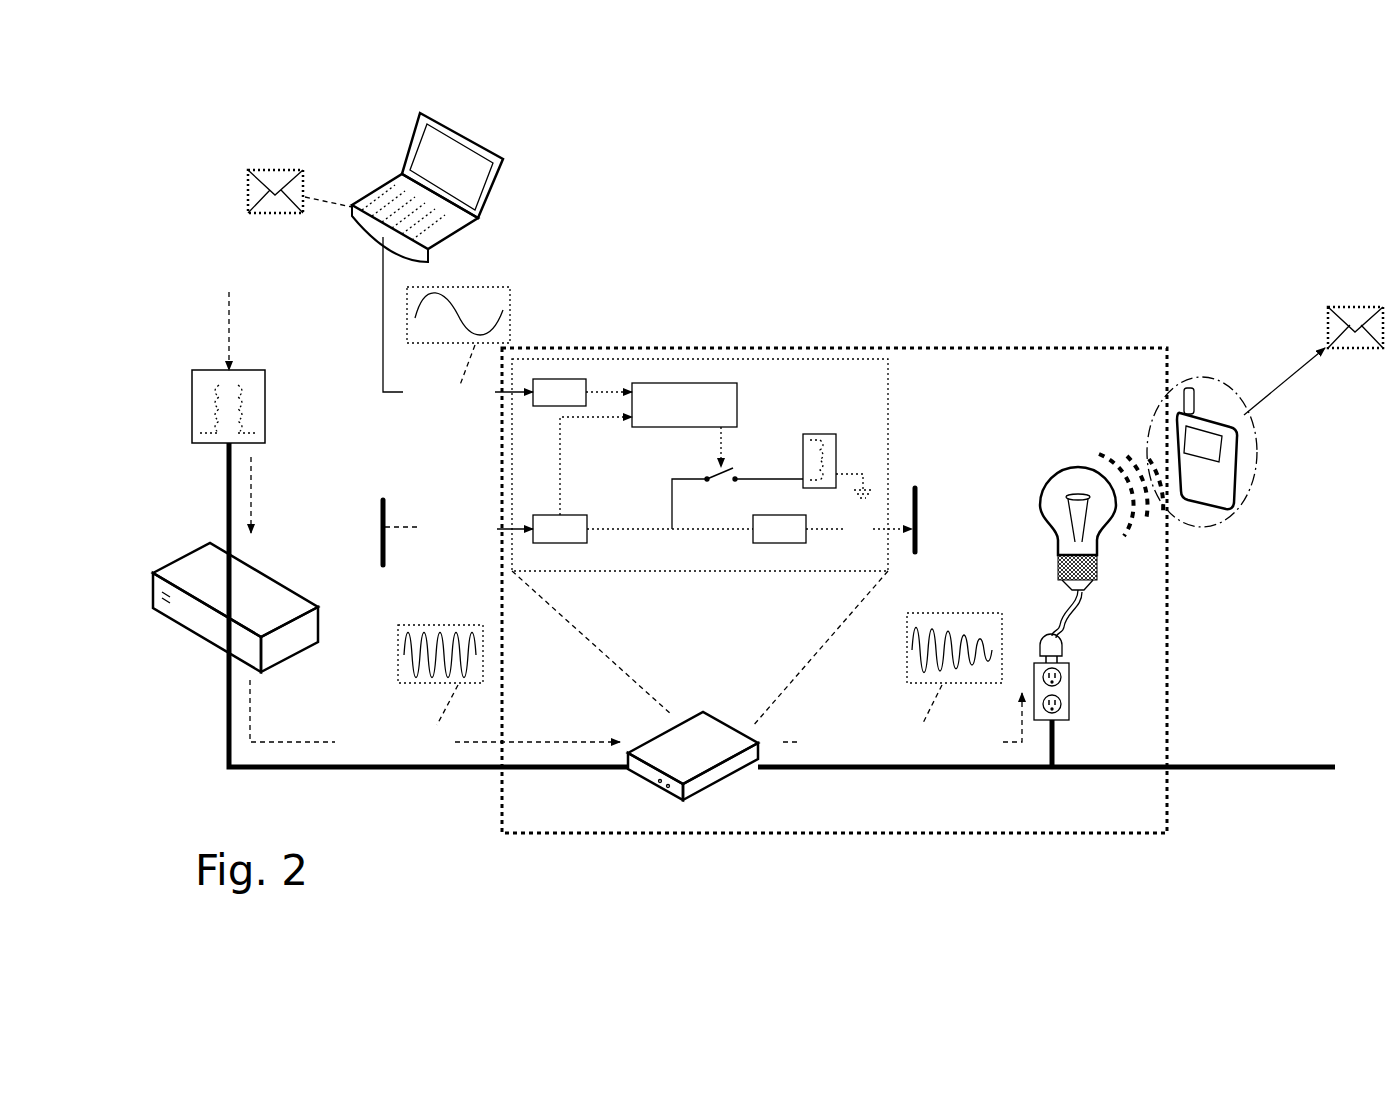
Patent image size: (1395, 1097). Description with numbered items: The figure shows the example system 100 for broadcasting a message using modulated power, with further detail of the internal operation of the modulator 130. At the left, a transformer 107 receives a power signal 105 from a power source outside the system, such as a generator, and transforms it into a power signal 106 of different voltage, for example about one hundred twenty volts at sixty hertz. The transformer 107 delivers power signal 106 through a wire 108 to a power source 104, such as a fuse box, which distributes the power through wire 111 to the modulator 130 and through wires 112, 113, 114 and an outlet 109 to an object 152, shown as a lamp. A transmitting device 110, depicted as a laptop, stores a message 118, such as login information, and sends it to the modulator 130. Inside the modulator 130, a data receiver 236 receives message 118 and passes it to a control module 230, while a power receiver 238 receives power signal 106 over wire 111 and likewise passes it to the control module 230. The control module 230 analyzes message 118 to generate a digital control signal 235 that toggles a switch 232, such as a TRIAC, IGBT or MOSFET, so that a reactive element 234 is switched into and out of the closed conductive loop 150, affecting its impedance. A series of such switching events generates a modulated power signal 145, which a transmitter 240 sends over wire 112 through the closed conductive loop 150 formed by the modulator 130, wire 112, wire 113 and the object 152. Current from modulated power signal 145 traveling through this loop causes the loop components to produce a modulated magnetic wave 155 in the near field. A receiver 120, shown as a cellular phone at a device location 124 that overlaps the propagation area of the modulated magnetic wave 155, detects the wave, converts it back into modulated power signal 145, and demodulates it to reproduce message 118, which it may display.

The system 100 is at (1280, 173).
The power source 104 is at (172, 565).
The power signal 105 is at (215, 330).
The power signal 106 is at (262, 497).
The transformer 107 is at (192, 425).
The wire 108 is at (227, 478).
The outlet 109 is at (1070, 672).
The transmitting device 110 is at (500, 192).
The wire 111 is at (380, 527).
The wire 112 is at (945, 564).
The wire 113 is at (1056, 753).
The wire 114 is at (1225, 770).
The message 118 is at (248, 192).
The receiver 120 is at (1243, 480).
The device location 124 is at (1197, 377).
The modulator 130 is at (868, 387).
The modulated power signal 145 is at (902, 635).
The closed conductive loop 150 is at (918, 348).
The object 152 is at (1075, 467).
The modulated magnetic wave 155 is at (1142, 508).
The control module 230 is at (684, 405).
The switch 232 is at (708, 471).
The reactive element 234 is at (838, 440).
The control signal 235 is at (735, 443).
The data receiver 236 is at (572, 378).
The power receiver 238 is at (565, 543).
The transmitter 240 is at (780, 543).